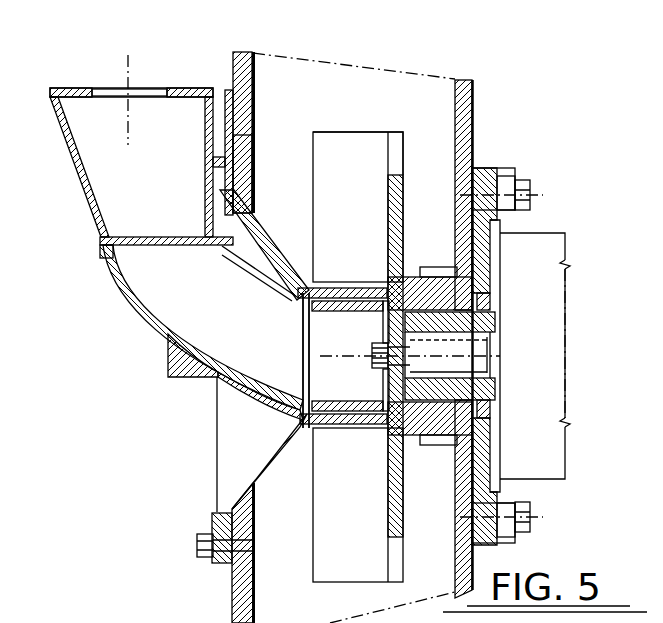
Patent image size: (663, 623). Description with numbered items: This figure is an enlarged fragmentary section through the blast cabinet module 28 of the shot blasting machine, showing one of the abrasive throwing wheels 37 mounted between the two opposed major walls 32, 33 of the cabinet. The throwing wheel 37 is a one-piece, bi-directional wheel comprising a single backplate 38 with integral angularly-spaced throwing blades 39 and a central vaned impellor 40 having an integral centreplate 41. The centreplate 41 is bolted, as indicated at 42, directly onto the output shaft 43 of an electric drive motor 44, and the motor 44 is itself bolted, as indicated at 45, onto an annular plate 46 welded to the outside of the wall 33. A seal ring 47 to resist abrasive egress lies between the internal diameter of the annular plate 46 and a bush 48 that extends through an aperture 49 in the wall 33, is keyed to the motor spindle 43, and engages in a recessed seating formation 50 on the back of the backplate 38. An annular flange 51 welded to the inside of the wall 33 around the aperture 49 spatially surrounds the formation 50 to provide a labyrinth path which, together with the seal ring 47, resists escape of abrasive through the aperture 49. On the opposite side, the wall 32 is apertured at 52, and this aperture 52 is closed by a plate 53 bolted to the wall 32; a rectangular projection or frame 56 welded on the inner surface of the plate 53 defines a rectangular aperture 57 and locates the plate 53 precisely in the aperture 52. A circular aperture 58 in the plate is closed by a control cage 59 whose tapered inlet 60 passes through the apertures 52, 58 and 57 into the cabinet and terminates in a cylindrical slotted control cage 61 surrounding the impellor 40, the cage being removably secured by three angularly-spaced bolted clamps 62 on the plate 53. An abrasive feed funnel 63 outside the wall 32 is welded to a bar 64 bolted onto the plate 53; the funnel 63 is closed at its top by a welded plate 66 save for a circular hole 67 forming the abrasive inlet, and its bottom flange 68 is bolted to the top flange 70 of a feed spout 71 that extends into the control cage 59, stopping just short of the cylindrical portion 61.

The blast cabinet module 28 is at (473, 85).
The major wall 32 is at (242, 70).
The major wall 33 is at (472, 113).
The abrasive throwing wheel 37 is at (380, 130).
The backplate 38 is at (393, 230).
The throwing blades 39 is at (353, 157).
The vaned impellor 40 is at (353, 412).
The centreplate 41 is at (380, 300).
The bolt 42 is at (373, 350).
The output shaft 43 is at (483, 357).
The electric drive motor 44 is at (556, 258).
The bolt 45 is at (518, 175).
The annular plate 46 is at (475, 242).
The seal ring 47 is at (490, 307).
The bush 48 is at (488, 393).
The aperture 49 is at (463, 420).
The recessed seating formation 50 is at (433, 277).
The annular flange 51 is at (433, 447).
The aperture 52 is at (254, 582).
The plate 53 is at (220, 573).
The rectangular projection or frame 56 is at (252, 153).
The rectangular aperture 57 is at (257, 213).
The circular aperture 58 is at (220, 500).
The control cage 59 is at (247, 450).
The tapered inlet 60 is at (255, 252).
The cylindrical slotted control cage 61 is at (328, 425).
The bolted clamps 62 is at (195, 543).
The abrasive feed funnel 63 is at (72, 158).
The bar 64 is at (253, 103).
The welded plate 66 is at (82, 90).
The circular hole 67 is at (105, 88).
The bottom flange 68 is at (100, 240).
The top flange 70 is at (102, 248).
The feed spout 71 is at (163, 330).